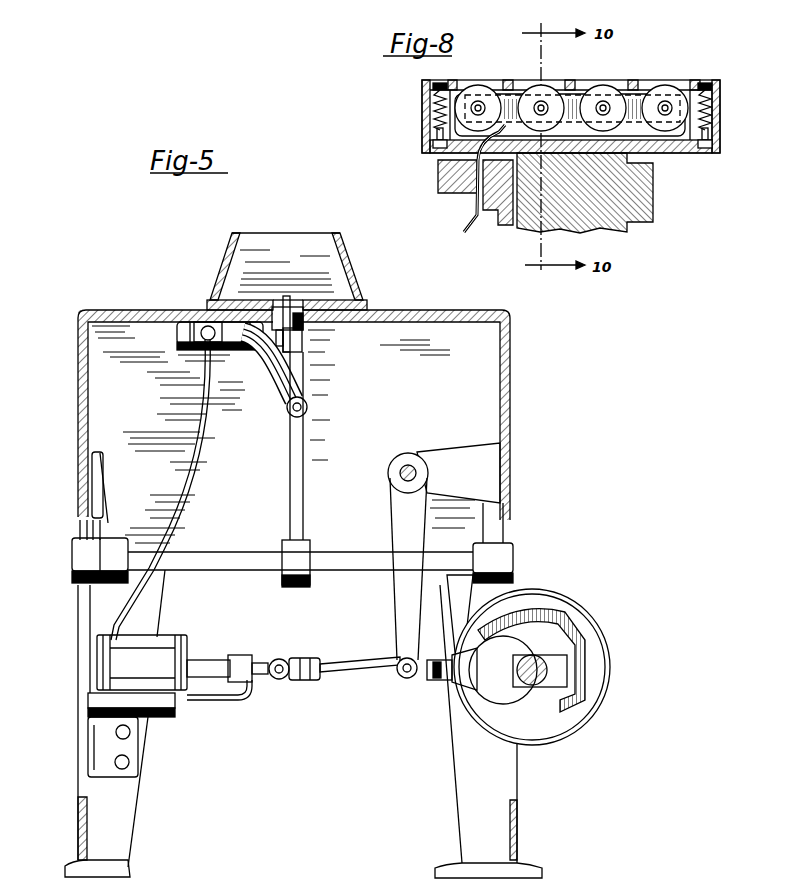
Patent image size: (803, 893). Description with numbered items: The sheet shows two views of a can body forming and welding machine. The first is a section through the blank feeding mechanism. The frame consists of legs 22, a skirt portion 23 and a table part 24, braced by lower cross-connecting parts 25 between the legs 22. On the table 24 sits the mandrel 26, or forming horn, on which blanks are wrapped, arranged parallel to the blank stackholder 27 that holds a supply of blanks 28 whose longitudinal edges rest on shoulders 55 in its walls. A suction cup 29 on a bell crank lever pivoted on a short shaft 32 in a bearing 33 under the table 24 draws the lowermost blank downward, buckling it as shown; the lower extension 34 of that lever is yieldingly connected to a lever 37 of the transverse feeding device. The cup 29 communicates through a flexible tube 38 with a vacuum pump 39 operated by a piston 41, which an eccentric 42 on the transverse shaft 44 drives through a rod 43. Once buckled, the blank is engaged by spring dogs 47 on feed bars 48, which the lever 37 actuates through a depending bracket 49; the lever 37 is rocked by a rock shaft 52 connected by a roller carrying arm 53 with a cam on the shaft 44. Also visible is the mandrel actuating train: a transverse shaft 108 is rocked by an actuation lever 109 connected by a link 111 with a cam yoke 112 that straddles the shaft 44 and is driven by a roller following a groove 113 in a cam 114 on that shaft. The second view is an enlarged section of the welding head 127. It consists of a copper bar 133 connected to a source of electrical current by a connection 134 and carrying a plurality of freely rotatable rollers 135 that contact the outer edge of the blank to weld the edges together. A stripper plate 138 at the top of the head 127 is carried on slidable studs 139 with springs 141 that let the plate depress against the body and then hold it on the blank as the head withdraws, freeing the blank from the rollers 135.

In FIG. 5, the legs 22 is at (468, 802).
In FIG. 5, the skirt portion 23 is at (78, 423).
In FIG. 5, the table part 24 is at (430, 315).
In FIG. 5, the lower cross-connecting parts 25 is at (518, 830).
In FIG. 5, the mandrel 26 is at (106, 731).
In FIG. 5, the blank stackholder 27 is at (345, 252).
In FIG. 5, the blanks 28 is at (267, 290).
In FIG. 5, the suction cup 29 is at (290, 300).
In FIG. 5, the short shaft 32 is at (177, 333).
In FIG. 5, the bearing 33 is at (195, 352).
In FIG. 5, the lower extension 34 is at (268, 400).
In FIG. 5, the lever 37 is at (303, 447).
In FIG. 5, the flexible tube 38 is at (190, 493).
In FIG. 5, the vacuum pump 39 is at (145, 652).
In FIG. 5, the piston 41 is at (208, 665).
In FIG. 5, the eccentric 42 is at (533, 590).
In FIG. 5, the rod 43 is at (372, 666).
In FIG. 5, the transverse shaft 44 is at (522, 683).
In FIG. 5, the spring dogs 47 is at (306, 302).
In FIG. 5, the feed bars 48 is at (313, 322).
In FIG. 5, the depending bracket 49 is at (307, 340).
In FIG. 5, the rock shaft 52 is at (345, 552).
In FIG. 5, the roller carrying arm 53 is at (463, 607).
In FIG. 5, the shoulders 55 is at (345, 293).
In FIG. 5, the transverse shaft 108 is at (410, 463).
In FIG. 5, the actuation lever 109 is at (400, 610).
In FIG. 5, the link 111 is at (437, 677).
In FIG. 5, the cam yoke 112 is at (490, 682).
In FIG. 5, the groove 113 is at (578, 648).
In FIG. 5, the cam 114 is at (593, 668).
In FIG. 8, the welding head 127 is at (682, 157).
In FIG. 8, the copper bar 133 is at (573, 117).
In FIG. 8, the connection 134 is at (477, 215).
In FIG. 8, the rollers 135 is at (602, 90).
In FIG. 8, the stripper plate 138 is at (685, 82).
In FIG. 8, the slidable studs 139 is at (720, 123).
In FIG. 8, the springs 141 is at (717, 95).